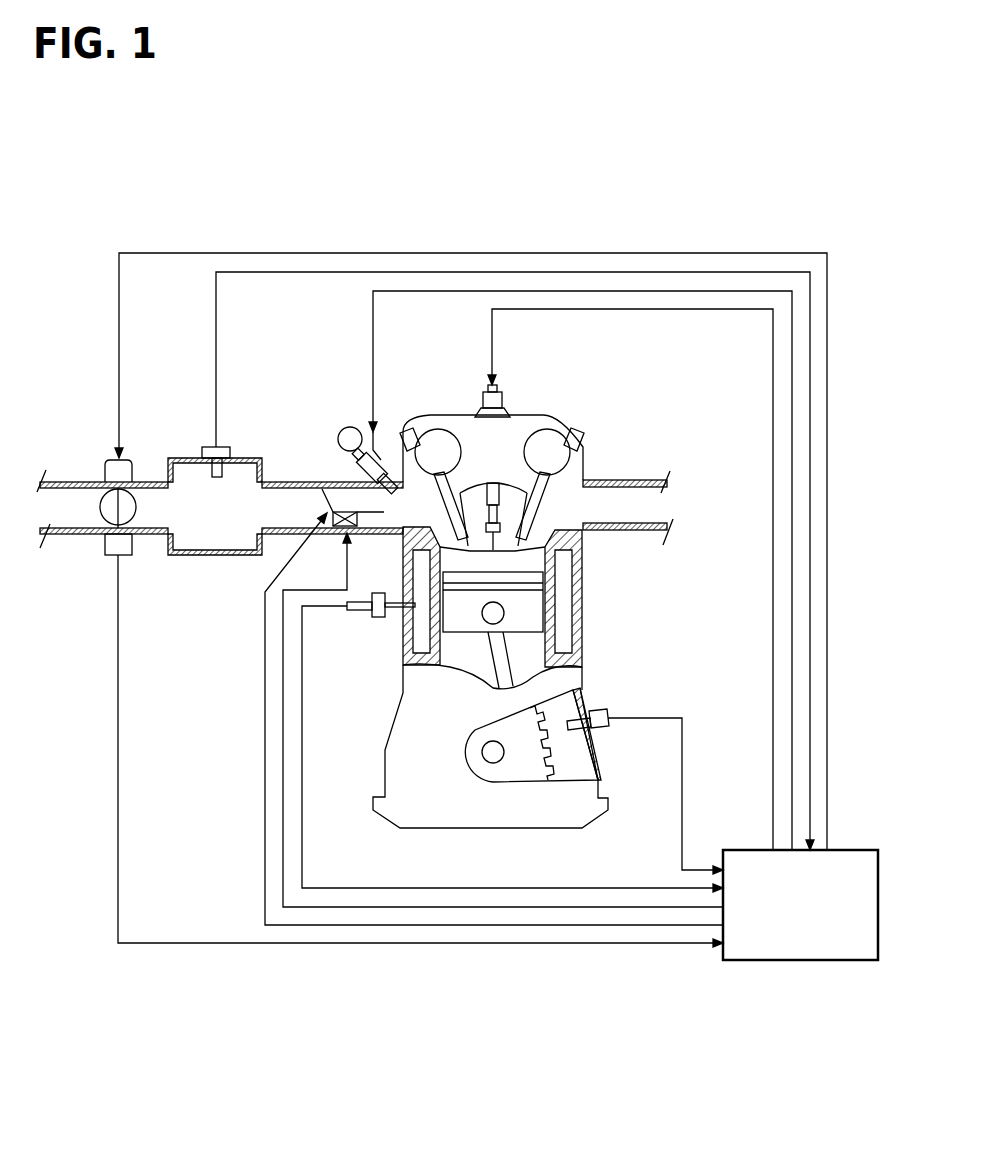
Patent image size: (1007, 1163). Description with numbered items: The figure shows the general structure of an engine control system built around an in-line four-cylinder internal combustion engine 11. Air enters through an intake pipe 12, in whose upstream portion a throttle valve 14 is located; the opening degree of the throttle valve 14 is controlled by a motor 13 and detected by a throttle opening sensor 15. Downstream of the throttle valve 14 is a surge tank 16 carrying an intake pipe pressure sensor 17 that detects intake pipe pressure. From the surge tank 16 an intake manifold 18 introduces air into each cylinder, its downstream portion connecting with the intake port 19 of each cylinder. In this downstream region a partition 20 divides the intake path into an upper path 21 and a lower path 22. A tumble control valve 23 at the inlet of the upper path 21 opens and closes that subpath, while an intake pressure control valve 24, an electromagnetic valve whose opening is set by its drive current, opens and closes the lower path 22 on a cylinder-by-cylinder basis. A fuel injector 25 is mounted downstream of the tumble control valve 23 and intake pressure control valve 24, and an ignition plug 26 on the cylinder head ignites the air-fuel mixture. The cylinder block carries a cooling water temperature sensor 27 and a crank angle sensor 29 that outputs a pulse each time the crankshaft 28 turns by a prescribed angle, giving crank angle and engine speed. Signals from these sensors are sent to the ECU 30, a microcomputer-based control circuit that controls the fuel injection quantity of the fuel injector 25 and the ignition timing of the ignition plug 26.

The engine 11 is at (552, 410).
The intake pipe 12 is at (60, 481).
The motor 13 is at (103, 464).
The throttle valve 14 is at (106, 509).
The throttle opening sensor 15 is at (127, 557).
The surge tank 16 is at (213, 556).
The intake pipe pressure sensor 17 is at (201, 446).
The intake manifold 18 is at (262, 478).
The intake port 19 is at (394, 497).
The partition 20 is at (363, 497).
The upper path 21 is at (325, 497).
The lower path 22 is at (372, 520).
The tumble control valve 23 is at (313, 497).
The intake pressure control valve 24 is at (332, 528).
The fuel injector 25 is at (388, 462).
The ignition plug 26 is at (508, 448).
The cooling water temperature sensor 27 is at (378, 618).
The crankshaft 28 is at (493, 764).
The crank angle sensor 29 is at (600, 710).
The ECU 30 is at (850, 849).